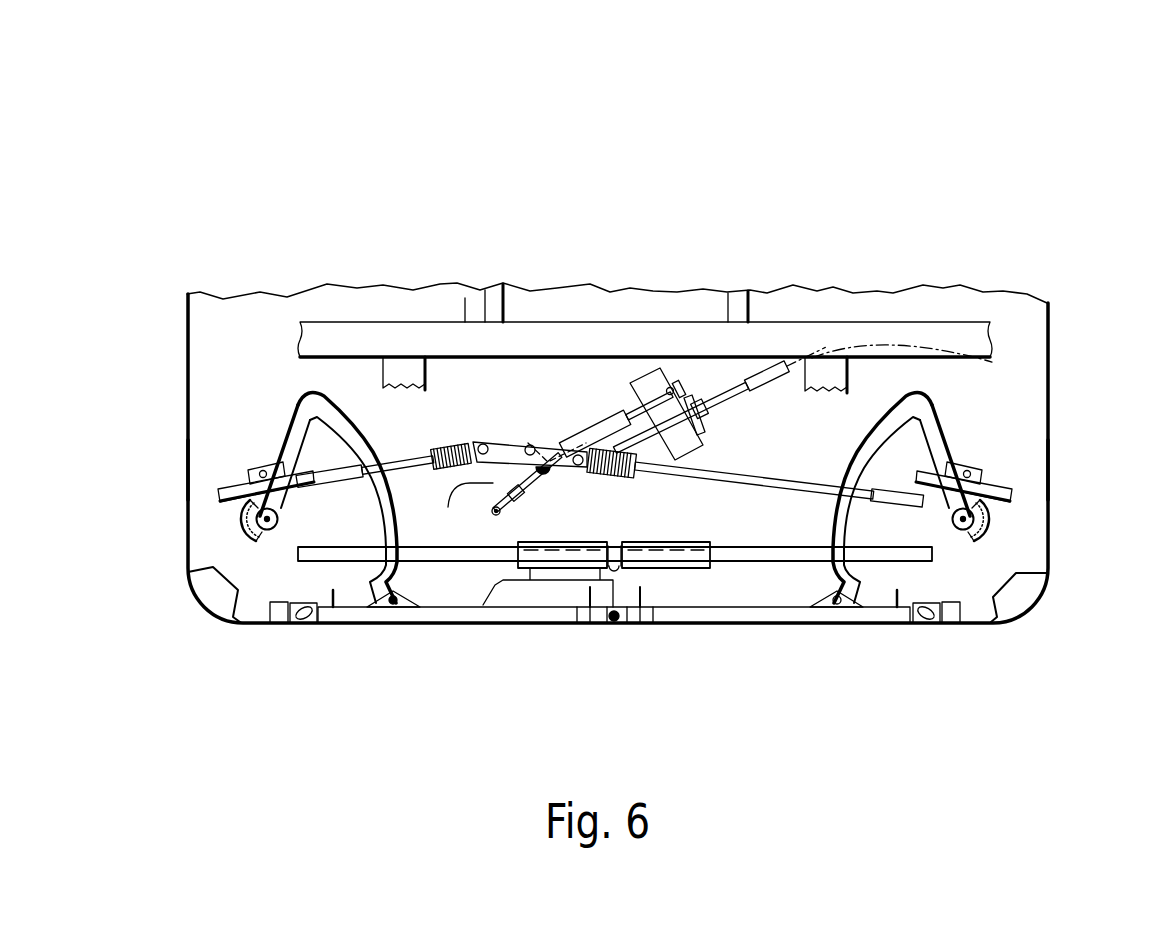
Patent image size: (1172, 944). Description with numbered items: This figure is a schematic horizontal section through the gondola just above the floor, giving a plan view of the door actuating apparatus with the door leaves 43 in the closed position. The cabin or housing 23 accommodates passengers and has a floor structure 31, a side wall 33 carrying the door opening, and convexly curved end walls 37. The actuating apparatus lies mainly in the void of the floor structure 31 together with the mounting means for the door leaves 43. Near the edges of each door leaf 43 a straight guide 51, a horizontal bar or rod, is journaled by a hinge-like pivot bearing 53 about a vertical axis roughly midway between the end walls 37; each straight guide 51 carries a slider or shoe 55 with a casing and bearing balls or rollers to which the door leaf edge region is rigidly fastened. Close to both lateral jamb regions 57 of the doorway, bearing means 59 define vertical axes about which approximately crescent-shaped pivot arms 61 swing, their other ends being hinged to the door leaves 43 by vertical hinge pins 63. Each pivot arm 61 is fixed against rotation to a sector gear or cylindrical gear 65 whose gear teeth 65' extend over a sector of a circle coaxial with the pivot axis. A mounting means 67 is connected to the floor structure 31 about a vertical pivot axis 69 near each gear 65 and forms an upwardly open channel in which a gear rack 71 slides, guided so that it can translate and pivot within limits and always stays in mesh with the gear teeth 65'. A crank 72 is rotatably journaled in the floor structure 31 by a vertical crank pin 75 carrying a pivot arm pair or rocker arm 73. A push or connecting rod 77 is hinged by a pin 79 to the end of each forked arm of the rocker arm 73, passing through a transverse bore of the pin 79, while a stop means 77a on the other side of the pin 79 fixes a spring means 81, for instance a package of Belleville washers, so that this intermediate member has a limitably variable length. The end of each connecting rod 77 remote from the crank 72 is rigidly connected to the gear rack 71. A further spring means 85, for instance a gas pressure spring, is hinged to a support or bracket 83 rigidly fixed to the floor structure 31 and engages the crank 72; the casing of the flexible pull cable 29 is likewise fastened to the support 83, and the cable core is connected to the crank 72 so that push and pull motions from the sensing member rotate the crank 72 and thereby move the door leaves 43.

The cabin 23 is at (181, 355).
The flexible pull cable 29 is at (877, 322).
The floor structure 31 is at (465, 298).
The sidewall 33 is at (256, 624).
The end wall 37 is at (188, 464).
The door leaf 43 is at (537, 624).
The straight guide 51 is at (445, 562).
The pivot bearing 53 is at (623, 570).
The slider 55 is at (524, 543).
The lateral jamb region 57 is at (305, 624).
The bearing means 59 is at (266, 530).
The pivot arm 61 is at (292, 425).
The hinge pin 63 is at (400, 612).
The sector gear 65 is at (614, 531).
The gear teeth 65' is at (608, 521).
The mounting means 67 is at (273, 478).
The vertical pivot axis 69 is at (255, 468).
The gear rack 71 is at (225, 497).
The crank 72 is at (448, 507).
The rocker arm 73 is at (573, 417).
The crank pin 75 is at (613, 447).
The connecting rod 77 is at (405, 452).
The stop means 77a is at (432, 452).
The pin 79 is at (530, 445).
The spring means 81 is at (482, 444).
The support 83 is at (704, 395).
The further spring means 85 is at (660, 368).